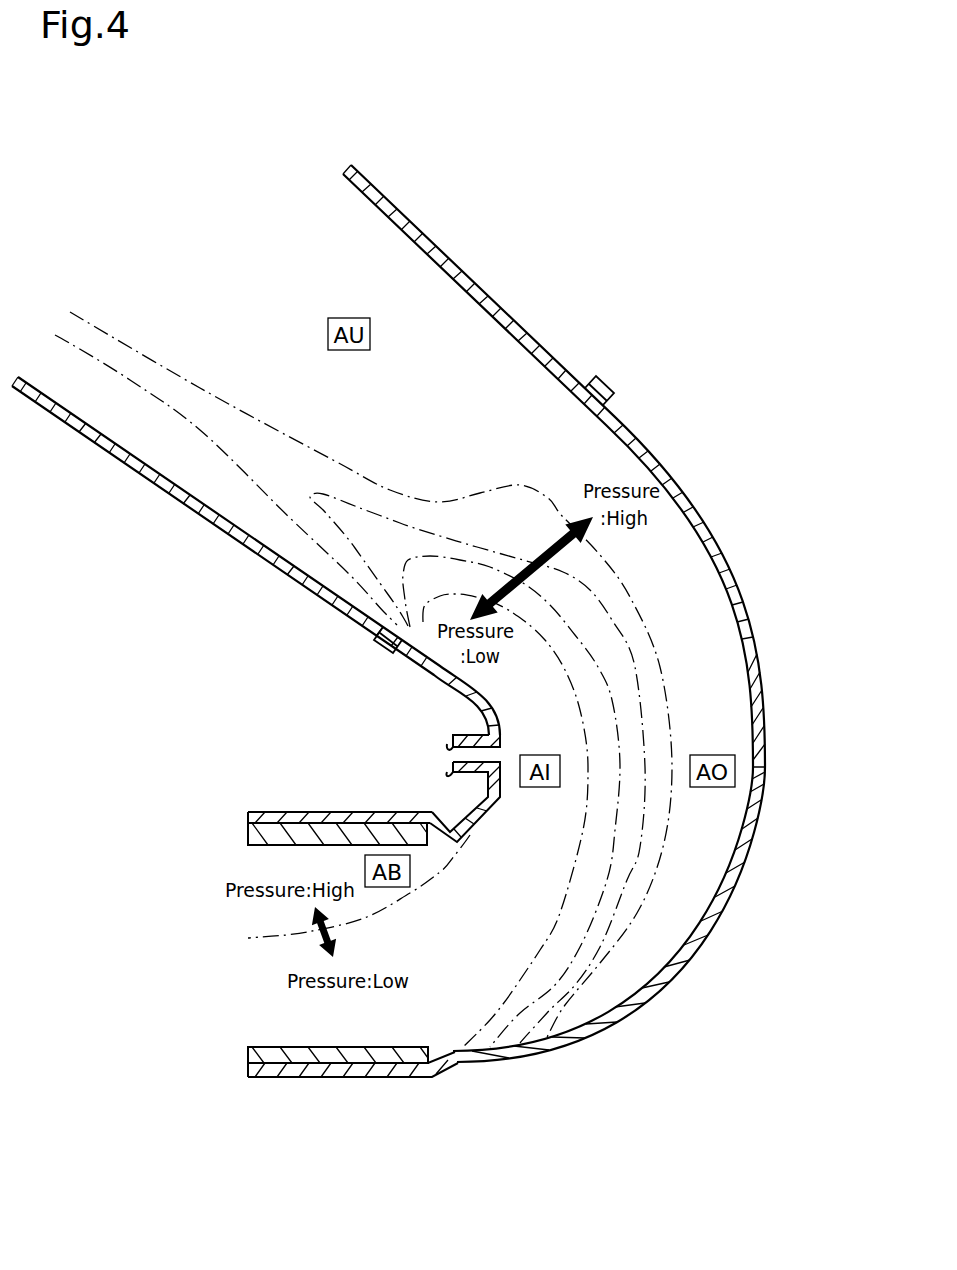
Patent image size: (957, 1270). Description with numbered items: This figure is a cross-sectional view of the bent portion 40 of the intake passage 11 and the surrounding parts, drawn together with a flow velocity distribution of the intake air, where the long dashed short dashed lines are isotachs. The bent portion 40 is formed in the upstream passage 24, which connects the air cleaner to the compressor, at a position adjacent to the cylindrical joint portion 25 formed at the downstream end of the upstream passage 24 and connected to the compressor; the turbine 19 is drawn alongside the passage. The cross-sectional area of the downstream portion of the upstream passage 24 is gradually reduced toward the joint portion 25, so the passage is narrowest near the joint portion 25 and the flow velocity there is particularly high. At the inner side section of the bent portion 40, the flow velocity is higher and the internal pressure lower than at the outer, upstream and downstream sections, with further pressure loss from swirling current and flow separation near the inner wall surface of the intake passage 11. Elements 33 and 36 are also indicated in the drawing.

The intake passage 11 is at (388, 647).
The turbine 19 is at (257, 850).
The upstream passage 24 is at (484, 283).
The joint portion 25 is at (296, 812).
The nozzle portion 33 is at (449, 775).
The flange 36 is at (458, 736).
The bent portion 40 is at (768, 764).